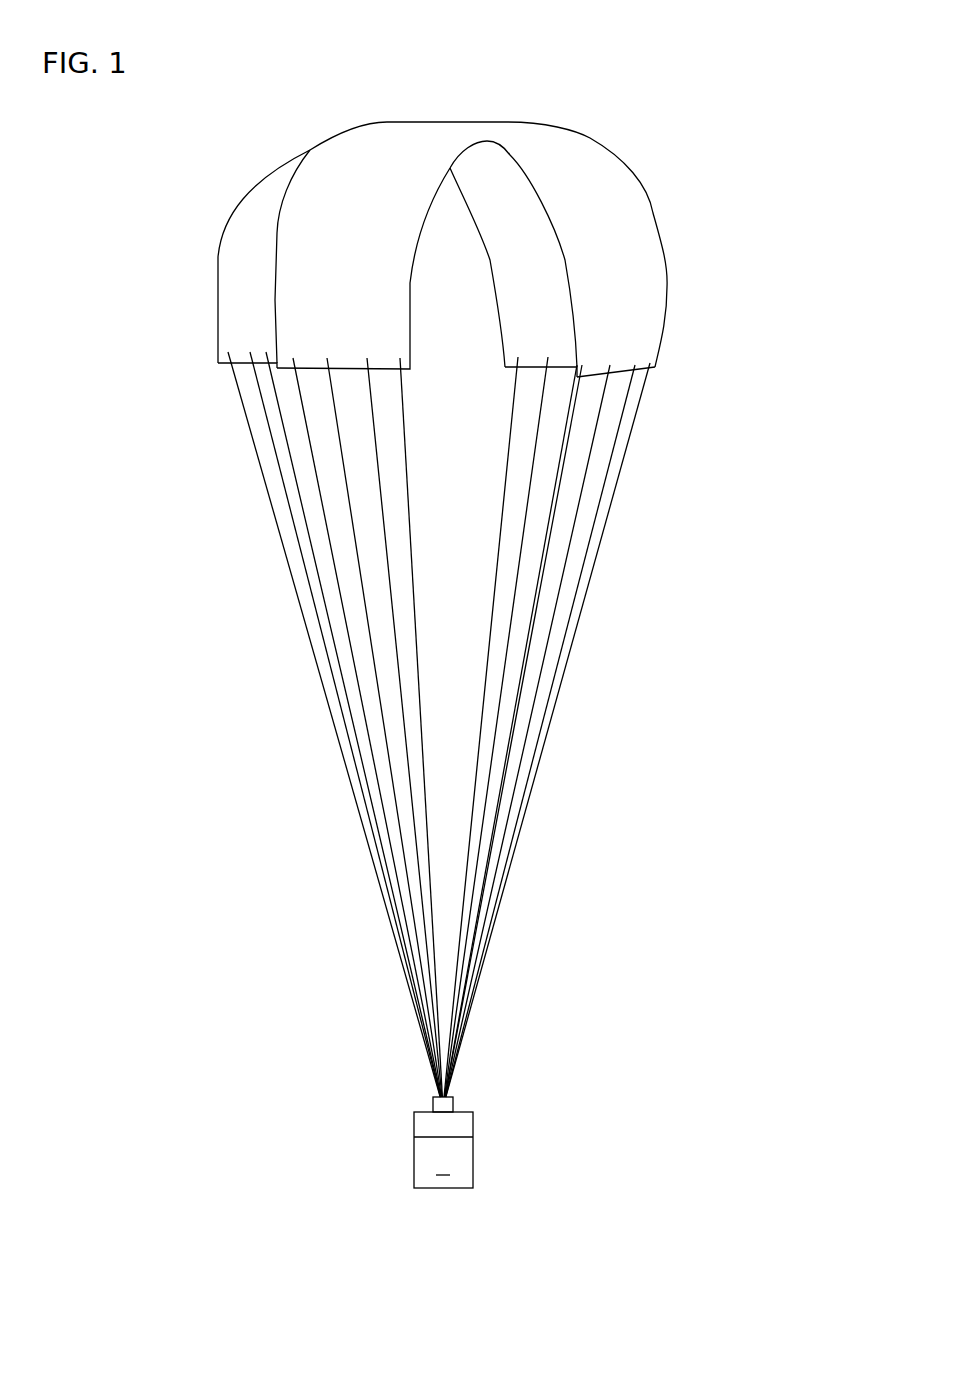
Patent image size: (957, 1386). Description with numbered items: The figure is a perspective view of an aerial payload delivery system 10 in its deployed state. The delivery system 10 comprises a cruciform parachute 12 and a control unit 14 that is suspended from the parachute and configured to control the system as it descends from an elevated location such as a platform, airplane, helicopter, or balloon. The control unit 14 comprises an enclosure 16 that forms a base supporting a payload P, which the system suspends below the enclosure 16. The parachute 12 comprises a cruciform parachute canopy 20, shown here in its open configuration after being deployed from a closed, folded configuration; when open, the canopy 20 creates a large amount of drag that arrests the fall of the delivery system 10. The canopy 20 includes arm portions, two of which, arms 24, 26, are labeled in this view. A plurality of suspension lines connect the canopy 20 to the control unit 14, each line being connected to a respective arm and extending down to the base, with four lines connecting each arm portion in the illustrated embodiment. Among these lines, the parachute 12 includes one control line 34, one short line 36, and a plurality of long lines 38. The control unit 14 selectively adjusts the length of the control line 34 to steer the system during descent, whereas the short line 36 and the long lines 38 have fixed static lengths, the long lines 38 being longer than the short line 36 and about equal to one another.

The aerial payload delivery system 10 is at (124, 1013).
The cruciform parachute 12 is at (708, 364).
The control unit 14 is at (487, 1104).
The enclosure 16 is at (422, 1125).
The cruciform parachute canopy 20 is at (658, 218).
The arm 24 is at (293, 317).
The arm 26 is at (640, 315).
The control line 34 is at (410, 507).
The short line 36 is at (490, 615).
The long lines 38 is at (373, 653).